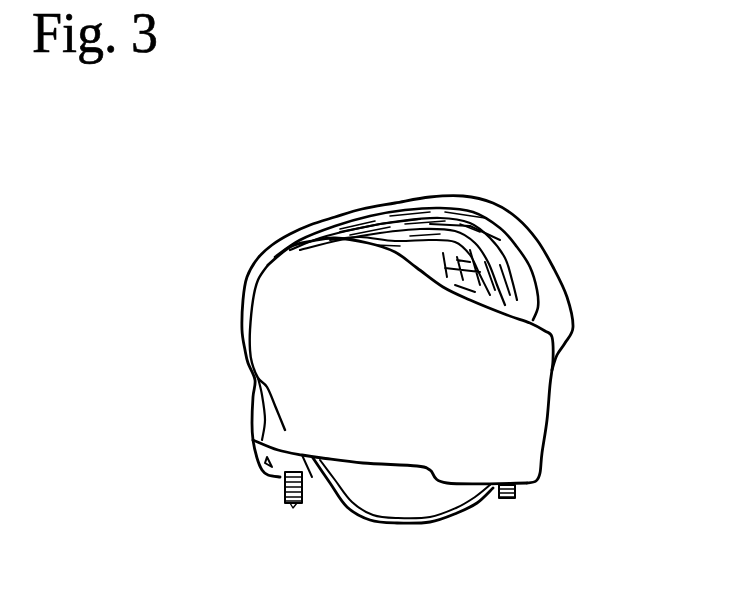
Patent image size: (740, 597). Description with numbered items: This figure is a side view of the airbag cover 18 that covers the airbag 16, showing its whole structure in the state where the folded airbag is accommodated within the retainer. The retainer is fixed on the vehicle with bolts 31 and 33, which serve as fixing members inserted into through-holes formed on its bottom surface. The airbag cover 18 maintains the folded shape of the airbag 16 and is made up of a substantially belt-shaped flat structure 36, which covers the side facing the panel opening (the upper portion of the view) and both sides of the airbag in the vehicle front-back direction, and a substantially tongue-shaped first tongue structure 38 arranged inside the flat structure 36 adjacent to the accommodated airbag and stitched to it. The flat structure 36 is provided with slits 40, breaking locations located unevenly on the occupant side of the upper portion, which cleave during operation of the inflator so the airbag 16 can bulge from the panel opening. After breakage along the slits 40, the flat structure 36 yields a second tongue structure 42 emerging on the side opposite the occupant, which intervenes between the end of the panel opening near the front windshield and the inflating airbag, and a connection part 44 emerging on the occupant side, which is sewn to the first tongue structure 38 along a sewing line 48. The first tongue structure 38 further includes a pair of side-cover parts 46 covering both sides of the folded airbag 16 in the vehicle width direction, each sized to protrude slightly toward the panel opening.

The airbag 16 is at (517, 297).
The airbag cover 18 is at (532, 253).
The bolt 31 is at (293, 500).
The bolt 33 is at (507, 503).
The flat structure 36 is at (353, 127).
The first tongue structure 38 is at (493, 243).
The slits 40 is at (360, 205).
The second tongue structure 42 is at (443, 203).
The connection part 44 is at (375, 203).
The side-cover part 46 is at (520, 376).
The sewing line 48 is at (265, 383).